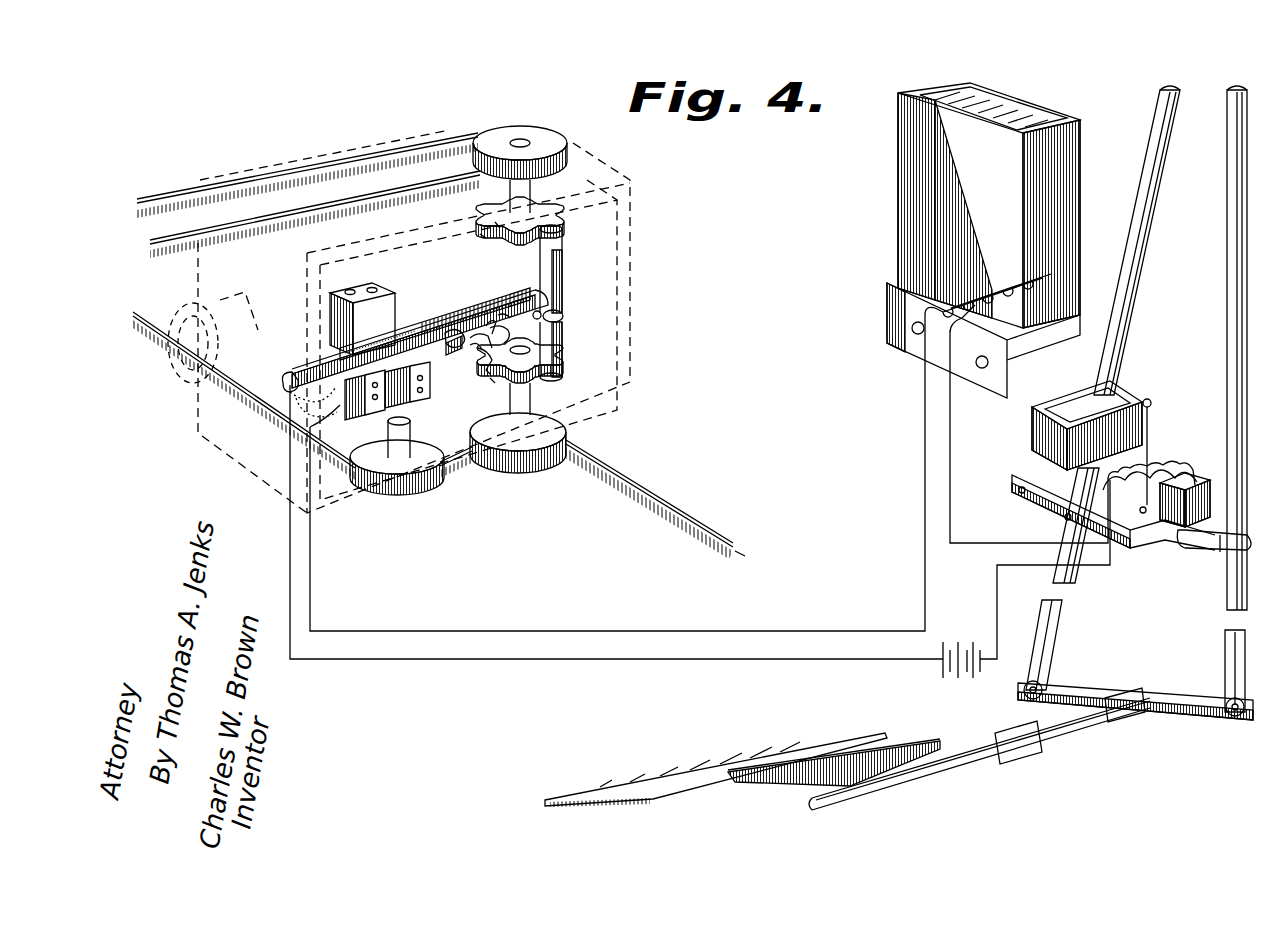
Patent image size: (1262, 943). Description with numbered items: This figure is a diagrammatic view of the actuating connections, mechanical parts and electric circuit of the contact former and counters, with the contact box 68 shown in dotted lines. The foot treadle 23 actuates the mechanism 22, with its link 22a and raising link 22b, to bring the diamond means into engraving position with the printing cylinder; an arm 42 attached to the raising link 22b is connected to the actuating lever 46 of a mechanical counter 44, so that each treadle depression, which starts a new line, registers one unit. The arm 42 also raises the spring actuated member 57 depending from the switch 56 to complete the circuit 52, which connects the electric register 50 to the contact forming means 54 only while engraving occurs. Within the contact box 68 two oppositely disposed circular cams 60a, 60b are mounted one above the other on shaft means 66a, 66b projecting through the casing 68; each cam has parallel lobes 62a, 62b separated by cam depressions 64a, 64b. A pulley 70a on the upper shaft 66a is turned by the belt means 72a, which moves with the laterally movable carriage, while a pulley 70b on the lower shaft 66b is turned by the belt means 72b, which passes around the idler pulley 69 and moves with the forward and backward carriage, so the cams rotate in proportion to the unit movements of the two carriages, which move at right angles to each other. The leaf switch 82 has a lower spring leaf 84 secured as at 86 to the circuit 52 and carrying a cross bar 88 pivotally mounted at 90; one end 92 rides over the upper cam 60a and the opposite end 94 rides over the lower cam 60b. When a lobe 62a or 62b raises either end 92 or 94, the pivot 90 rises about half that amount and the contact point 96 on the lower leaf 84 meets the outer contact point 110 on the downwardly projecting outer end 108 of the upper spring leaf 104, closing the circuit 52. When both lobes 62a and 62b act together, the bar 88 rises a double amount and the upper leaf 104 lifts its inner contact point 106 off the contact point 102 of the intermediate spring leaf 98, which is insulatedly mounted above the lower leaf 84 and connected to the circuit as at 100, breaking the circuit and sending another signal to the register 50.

The mechanism 22 is at (1110, 675).
The rod 22a is at (1135, 225).
The raising link 22b is at (1222, 288).
The foot treadle 23 is at (705, 765).
The arm 42 is at (1205, 552).
The mechanical counter 44 is at (1038, 425).
The actuating lever 46 is at (1147, 400).
The counter mechanism 50 is at (930, 176).
The electric circuit 52 is at (555, 660).
The contact forming means 54 is at (633, 286).
The switch 56 is at (1200, 470).
The spring actuated member 57 is at (1180, 535).
The upper circular cam 60a is at (575, 213).
The lower circular cam 60b is at (530, 385).
The cam lobes 62a is at (485, 222).
The cam lobes 62b is at (486, 378).
The cam depressions 64a is at (482, 236).
The cam depressions 64b is at (492, 380).
The upper shaft means 66a is at (535, 195).
The lower shaft means 66b is at (532, 398).
The contact box 68 is at (632, 380).
The idler pulley 69 is at (397, 478).
The upper pulley 70a is at (570, 140).
The lower pulley 70b is at (527, 455).
The belt means 72a is at (320, 160).
The belt means 72b is at (615, 490).
The leaf switch 82 is at (392, 292).
The lower spring leaf 84 is at (410, 325).
The securing point 86 is at (290, 378).
The cross bar 88 is at (566, 283).
The pivot point 90 is at (565, 312).
The first end of cross bar 92 is at (566, 260).
The opposite end of cross bar 94 is at (565, 362).
The contact point 96 is at (470, 328).
The intermediate spring leaf 98 is at (372, 402).
The connection point 100 is at (340, 410).
The contact point 102 is at (445, 322).
The upper spring leaf 104 is at (422, 392).
The inner contact point 106 is at (482, 370).
The outer end 108 is at (506, 325).
The outer contact point 110 is at (486, 330).